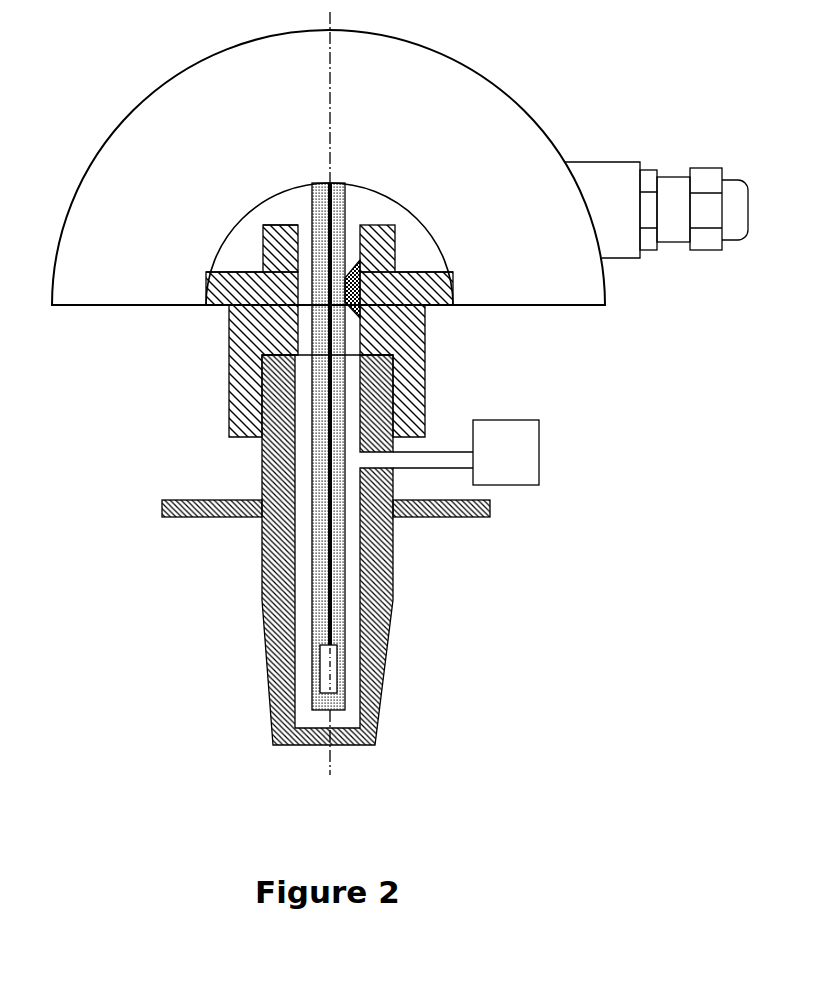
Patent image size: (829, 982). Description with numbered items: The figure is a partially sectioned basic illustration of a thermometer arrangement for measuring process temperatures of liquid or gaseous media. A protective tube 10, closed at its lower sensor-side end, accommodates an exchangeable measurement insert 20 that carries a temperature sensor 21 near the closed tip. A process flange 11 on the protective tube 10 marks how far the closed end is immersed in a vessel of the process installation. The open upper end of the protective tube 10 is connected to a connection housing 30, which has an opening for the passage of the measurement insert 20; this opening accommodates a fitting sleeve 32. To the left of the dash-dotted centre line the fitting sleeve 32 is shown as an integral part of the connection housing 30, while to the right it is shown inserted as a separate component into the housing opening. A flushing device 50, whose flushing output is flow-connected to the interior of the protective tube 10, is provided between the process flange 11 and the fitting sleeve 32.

The protective tube 10 is at (392, 598).
The process flange 11 is at (442, 517).
The measurement insert 20 is at (342, 610).
The temperature sensor 21 is at (340, 682).
The connection housing 30 is at (165, 273).
The fitting sleeve 32 is at (308, 288).
The flushing device 50 is at (505, 453).